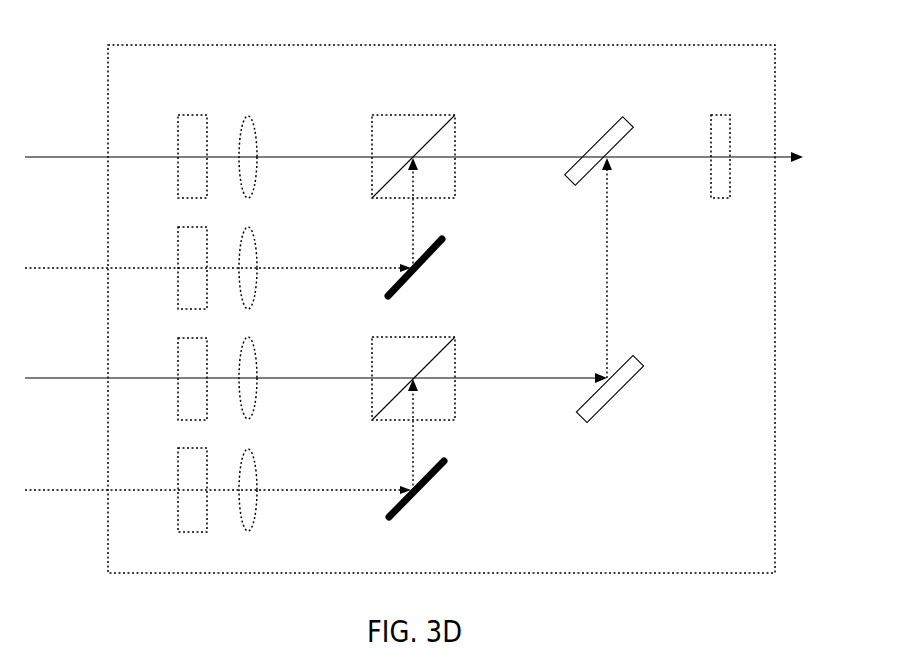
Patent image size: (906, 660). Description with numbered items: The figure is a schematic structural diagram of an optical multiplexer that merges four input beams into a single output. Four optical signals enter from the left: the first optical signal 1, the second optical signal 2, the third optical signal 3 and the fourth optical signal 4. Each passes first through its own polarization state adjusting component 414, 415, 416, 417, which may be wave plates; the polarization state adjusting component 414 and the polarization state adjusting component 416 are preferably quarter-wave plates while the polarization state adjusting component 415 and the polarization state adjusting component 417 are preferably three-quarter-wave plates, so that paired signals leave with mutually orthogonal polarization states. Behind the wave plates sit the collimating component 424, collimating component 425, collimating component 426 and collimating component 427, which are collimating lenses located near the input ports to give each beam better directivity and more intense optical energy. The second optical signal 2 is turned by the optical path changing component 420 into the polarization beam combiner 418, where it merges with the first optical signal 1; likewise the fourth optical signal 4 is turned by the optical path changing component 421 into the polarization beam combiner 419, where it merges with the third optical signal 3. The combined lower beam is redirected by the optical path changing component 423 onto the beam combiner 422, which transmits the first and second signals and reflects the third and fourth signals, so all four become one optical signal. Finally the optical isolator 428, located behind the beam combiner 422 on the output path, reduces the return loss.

The first optical signal 1 is at (81, 133).
The second optical signal 2 is at (81, 244).
The third optical signal 3 is at (81, 353).
The fourth optical signal 4 is at (81, 465).
The polarization state adjusting component 414 is at (193, 114).
The polarization state adjusting component 415 is at (193, 226).
The polarization state adjusting component 416 is at (193, 337).
The polarization state adjusting component 417 is at (193, 447).
The polarization beam combiner 418 is at (395, 114).
The polarization beam combiner 419 is at (397, 336).
The optical path changing component 420 is at (425, 268).
The optical path changing component 421 is at (432, 479).
The beam combiner 422 is at (606, 132).
The optical path changing component 423 is at (617, 398).
The collimating component 424 is at (257, 135).
The collimating component 425 is at (257, 246).
The collimating component 426 is at (257, 357).
The collimating component 427 is at (257, 469).
The optical isolator 428 is at (720, 114).